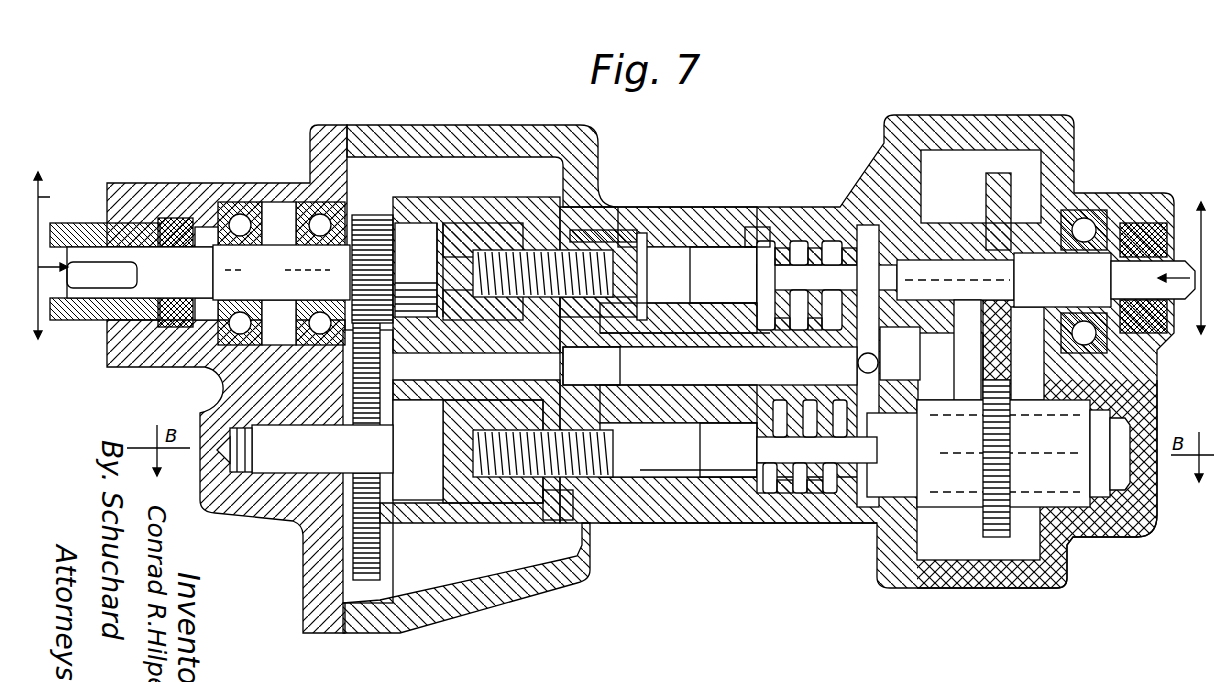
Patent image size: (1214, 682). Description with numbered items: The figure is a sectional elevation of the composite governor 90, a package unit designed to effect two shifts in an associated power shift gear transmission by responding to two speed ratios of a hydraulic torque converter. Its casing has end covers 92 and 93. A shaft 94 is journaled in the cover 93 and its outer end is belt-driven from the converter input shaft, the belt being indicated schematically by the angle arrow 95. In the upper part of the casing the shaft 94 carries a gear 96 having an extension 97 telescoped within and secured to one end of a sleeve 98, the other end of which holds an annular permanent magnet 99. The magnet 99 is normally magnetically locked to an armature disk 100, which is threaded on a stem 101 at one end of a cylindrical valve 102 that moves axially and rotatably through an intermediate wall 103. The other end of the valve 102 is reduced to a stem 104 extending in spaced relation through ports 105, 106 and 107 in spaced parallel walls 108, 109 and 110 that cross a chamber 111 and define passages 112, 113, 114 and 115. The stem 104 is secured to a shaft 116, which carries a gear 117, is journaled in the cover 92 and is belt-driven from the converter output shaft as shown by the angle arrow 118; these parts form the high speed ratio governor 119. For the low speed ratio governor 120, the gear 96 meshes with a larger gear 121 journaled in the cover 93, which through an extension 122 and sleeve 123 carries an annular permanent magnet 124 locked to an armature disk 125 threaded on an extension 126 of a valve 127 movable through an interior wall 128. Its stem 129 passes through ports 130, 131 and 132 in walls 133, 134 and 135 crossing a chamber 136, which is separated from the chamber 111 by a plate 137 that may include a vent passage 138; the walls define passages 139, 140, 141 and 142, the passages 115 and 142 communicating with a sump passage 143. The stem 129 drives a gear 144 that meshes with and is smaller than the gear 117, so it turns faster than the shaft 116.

The composite governor 90 is at (867, 318).
The end cover 92 is at (1072, 132).
The end cover 93 is at (310, 143).
The shaft 94 is at (283, 278).
The angle arrow 95 is at (123, 268).
The gear 96 is at (362, 212).
The extension 97 is at (419, 270).
The sleeve 98 is at (455, 198).
The annular permanent magnet 99 is at (483, 271).
The armature disk 100 is at (603, 232).
The stem 101 is at (697, 276).
The cylindrical valve 102 is at (723, 275).
The intermediate wall 103 is at (687, 227).
The stem 104 is at (885, 285).
The port 105 is at (783, 246).
The port 106 is at (812, 246).
The port 107 is at (847, 246).
The wall 108 is at (678, 318).
The wall 109 is at (805, 333).
The wall 110 is at (834, 333).
The chamber 111 is at (756, 230).
The passage 112 is at (767, 335).
The passage 113 is at (788, 331).
The passage 114 is at (836, 331).
The passage 115 is at (870, 366).
The shaft 116 is at (1074, 275).
The gear 117 is at (985, 192).
The angle arrow 118 is at (1181, 235).
The high speed ratio governor 119 is at (413, 165).
The low speed ratio governor 120 is at (455, 574).
The gear 121 is at (368, 582).
The extension 122 is at (330, 450).
The sleeve 123 is at (422, 524).
The annular permanent magnet 124 is at (493, 500).
The armature disk 125 is at (557, 508).
The extension 126 is at (614, 445).
The valve 127 is at (726, 450).
The interior wall 128 is at (683, 488).
The stem 129 is at (817, 450).
The port 130 is at (780, 486).
The port 131 is at (818, 486).
The port 132 is at (850, 492).
The wall 133 is at (775, 403).
The wall 134 is at (786, 420).
The wall 135 is at (825, 420).
The chamber 136 is at (762, 496).
The plate 137 is at (591, 366).
The passage 138 is at (685, 376).
The passage 139 is at (698, 463).
The passage 140 is at (798, 483).
The passage 141 is at (831, 486).
The passage 142 is at (866, 412).
The sump passage 143 is at (889, 354).
The gear 144 is at (1003, 540).